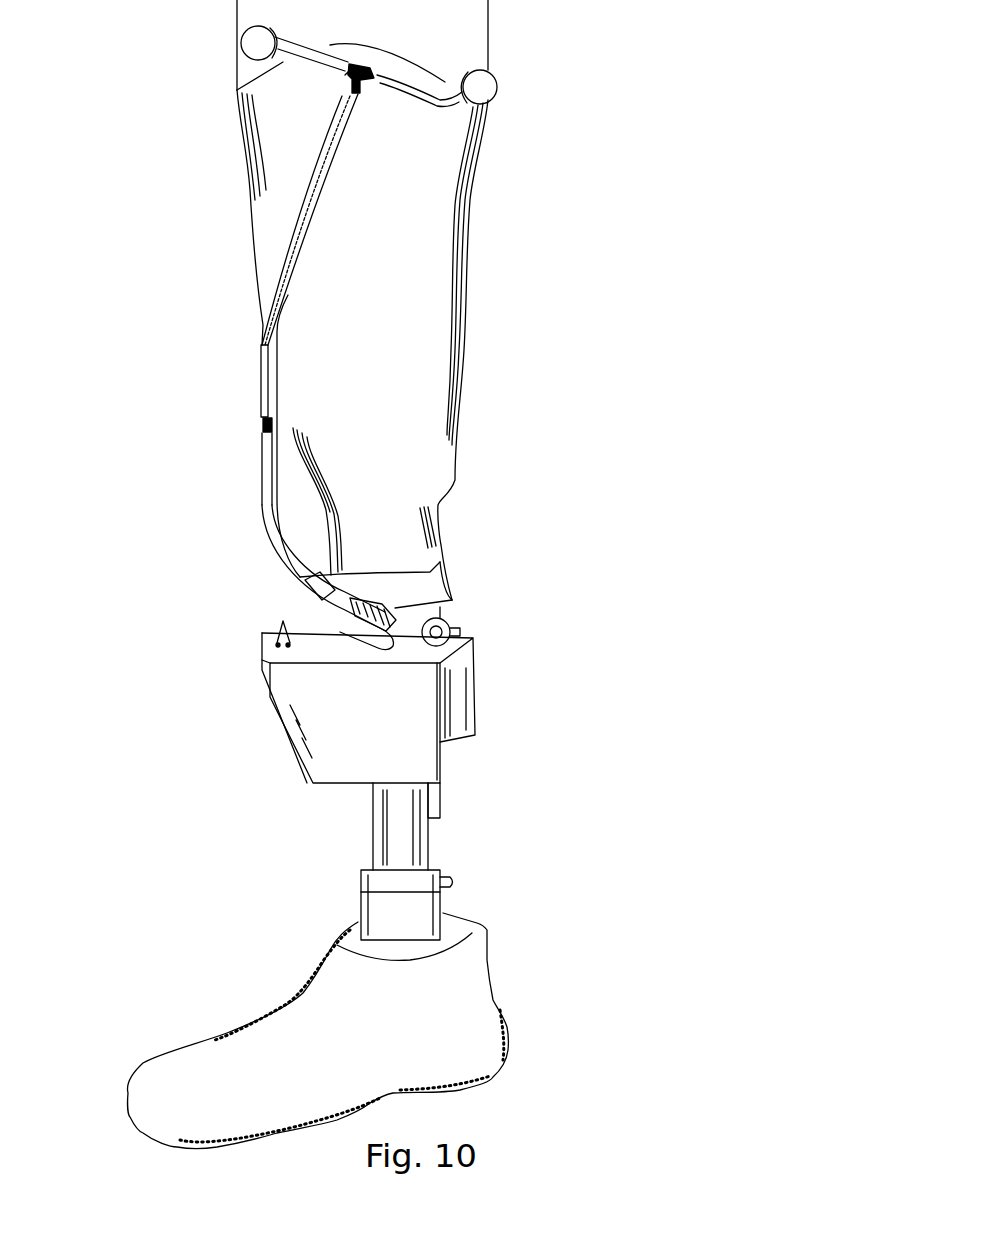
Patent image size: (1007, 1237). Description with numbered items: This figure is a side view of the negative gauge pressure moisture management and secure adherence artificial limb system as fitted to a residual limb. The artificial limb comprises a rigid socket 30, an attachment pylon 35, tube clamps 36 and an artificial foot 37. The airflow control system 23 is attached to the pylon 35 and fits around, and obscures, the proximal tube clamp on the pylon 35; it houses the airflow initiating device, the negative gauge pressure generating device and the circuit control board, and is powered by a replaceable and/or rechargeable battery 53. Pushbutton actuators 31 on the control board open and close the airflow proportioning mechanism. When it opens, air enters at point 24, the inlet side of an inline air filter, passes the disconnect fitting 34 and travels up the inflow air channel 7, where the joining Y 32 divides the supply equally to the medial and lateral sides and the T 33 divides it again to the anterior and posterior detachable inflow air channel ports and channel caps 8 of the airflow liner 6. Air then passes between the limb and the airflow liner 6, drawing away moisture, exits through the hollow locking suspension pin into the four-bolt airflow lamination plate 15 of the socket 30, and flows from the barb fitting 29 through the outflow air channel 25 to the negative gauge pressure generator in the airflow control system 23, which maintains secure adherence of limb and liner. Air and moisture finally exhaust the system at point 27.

The airflow liner 6 is at (483, 43).
The detachable inflow air channel ports and channel caps 8 is at (257, 43).
The T 33 is at (373, 80).
The rigid socket 30 is at (437, 477).
The inflow air channel 7 is at (260, 358).
The joining Y 32 is at (263, 427).
The outflow air channel 25 is at (300, 602).
The barb fitting 29 is at (317, 590).
The disconnect fitting 34 is at (367, 607).
The four-bolt airflow lamination plate 15 is at (415, 597).
The air inlet point 24 is at (450, 623).
The pushbutton actuators 31 is at (283, 618).
The airflow control system 23 is at (283, 735).
The battery 53 is at (457, 722).
The exhaust point 27 is at (443, 802).
The attachment pylon 35 is at (402, 845).
The tube clamps 36 is at (440, 900).
The artificial foot 37 is at (490, 1004).